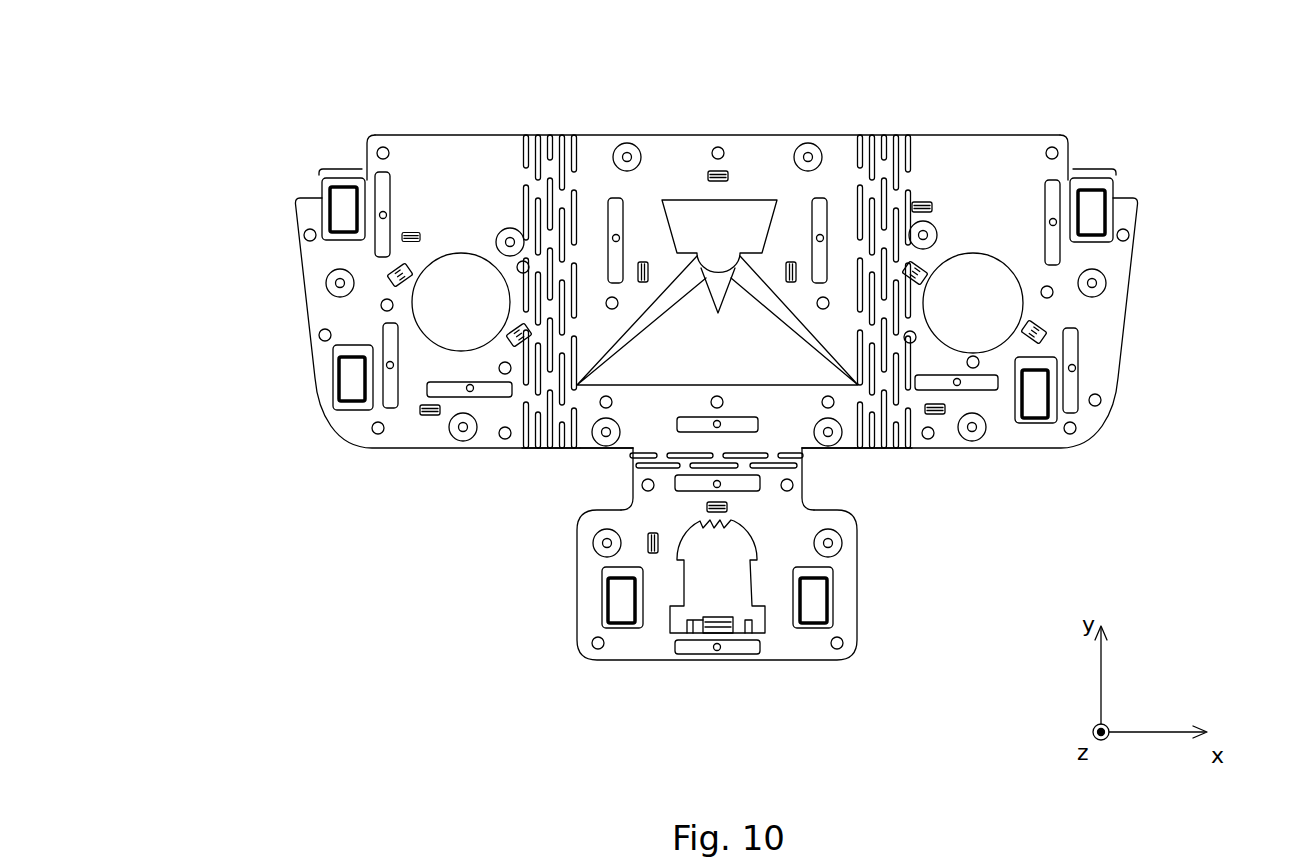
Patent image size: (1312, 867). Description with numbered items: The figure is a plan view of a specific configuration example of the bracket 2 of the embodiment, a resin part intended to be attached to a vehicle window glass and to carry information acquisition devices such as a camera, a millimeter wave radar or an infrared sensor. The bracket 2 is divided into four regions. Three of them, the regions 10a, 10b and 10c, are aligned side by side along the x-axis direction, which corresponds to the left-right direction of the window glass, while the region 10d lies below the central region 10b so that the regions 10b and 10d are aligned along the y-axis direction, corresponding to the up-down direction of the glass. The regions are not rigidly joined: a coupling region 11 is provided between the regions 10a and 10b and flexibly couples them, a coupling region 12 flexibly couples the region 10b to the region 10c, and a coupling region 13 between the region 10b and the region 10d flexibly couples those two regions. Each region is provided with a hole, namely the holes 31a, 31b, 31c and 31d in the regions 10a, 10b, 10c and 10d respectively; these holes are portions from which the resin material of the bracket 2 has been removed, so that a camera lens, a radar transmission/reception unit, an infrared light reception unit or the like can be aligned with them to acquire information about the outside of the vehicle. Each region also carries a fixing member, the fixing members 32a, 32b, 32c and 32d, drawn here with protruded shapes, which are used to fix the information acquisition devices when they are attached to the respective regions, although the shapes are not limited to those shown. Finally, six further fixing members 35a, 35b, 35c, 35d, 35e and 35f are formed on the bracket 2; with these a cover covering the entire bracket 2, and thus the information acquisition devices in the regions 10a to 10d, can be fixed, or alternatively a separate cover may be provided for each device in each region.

The bracket 2 is at (1138, 99).
The region 10a is at (452, 135).
The region 10b is at (655, 135).
The region 10c is at (990, 135).
The region 10d is at (850, 577).
The coupling region 11 is at (546, 120).
The coupling region 12 is at (885, 122).
The coupling region 13 is at (817, 463).
The hole 31a is at (425, 300).
The hole 31b is at (755, 205).
The hole 31c is at (1003, 301).
The hole 31d is at (740, 590).
The fixing member 32a is at (429, 416).
The fixing member 32b is at (710, 170).
The fixing member 32c is at (937, 415).
The fixing member 32d is at (650, 538).
The fixing member 35a is at (336, 191).
The fixing member 35b is at (352, 389).
The fixing member 35c is at (618, 606).
The fixing member 35d is at (822, 606).
The fixing member 35e is at (1045, 398).
The fixing member 35f is at (1100, 195).